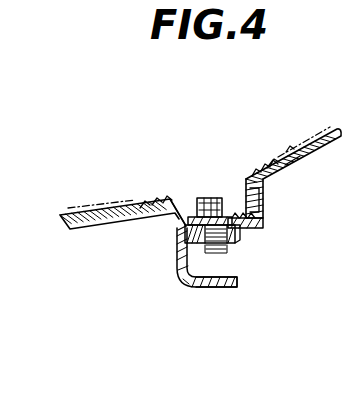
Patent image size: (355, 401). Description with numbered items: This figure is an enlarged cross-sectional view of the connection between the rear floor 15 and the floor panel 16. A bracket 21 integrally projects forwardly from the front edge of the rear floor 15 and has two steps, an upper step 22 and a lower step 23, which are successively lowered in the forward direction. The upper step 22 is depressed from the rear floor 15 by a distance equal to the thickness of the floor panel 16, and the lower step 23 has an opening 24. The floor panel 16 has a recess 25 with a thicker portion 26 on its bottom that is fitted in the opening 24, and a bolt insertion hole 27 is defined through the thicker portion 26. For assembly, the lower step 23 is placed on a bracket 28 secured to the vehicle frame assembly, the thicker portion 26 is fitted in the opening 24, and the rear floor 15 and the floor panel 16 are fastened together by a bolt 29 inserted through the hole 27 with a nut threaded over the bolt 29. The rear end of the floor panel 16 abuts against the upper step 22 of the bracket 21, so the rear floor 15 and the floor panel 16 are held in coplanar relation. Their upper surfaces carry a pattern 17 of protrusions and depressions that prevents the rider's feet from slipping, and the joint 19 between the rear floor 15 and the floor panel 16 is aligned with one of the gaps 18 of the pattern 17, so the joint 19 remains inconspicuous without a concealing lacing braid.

The rear floor 15 is at (322, 130).
The floor panel 16 is at (99, 212).
The pattern of protrusions and depressions 17 is at (262, 164).
The gaps 18 is at (275, 155).
The joint 19 is at (294, 166).
The bracket 21 is at (266, 209).
The upper step 22 is at (283, 182).
The lower step 23 is at (251, 219).
The opening 24 is at (185, 233).
The recess 25 is at (177, 212).
The thicker portion 26 is at (236, 243).
The bolt insertion hole 27 is at (225, 207).
The bracket 28 is at (203, 287).
The bolt 29 is at (205, 197).